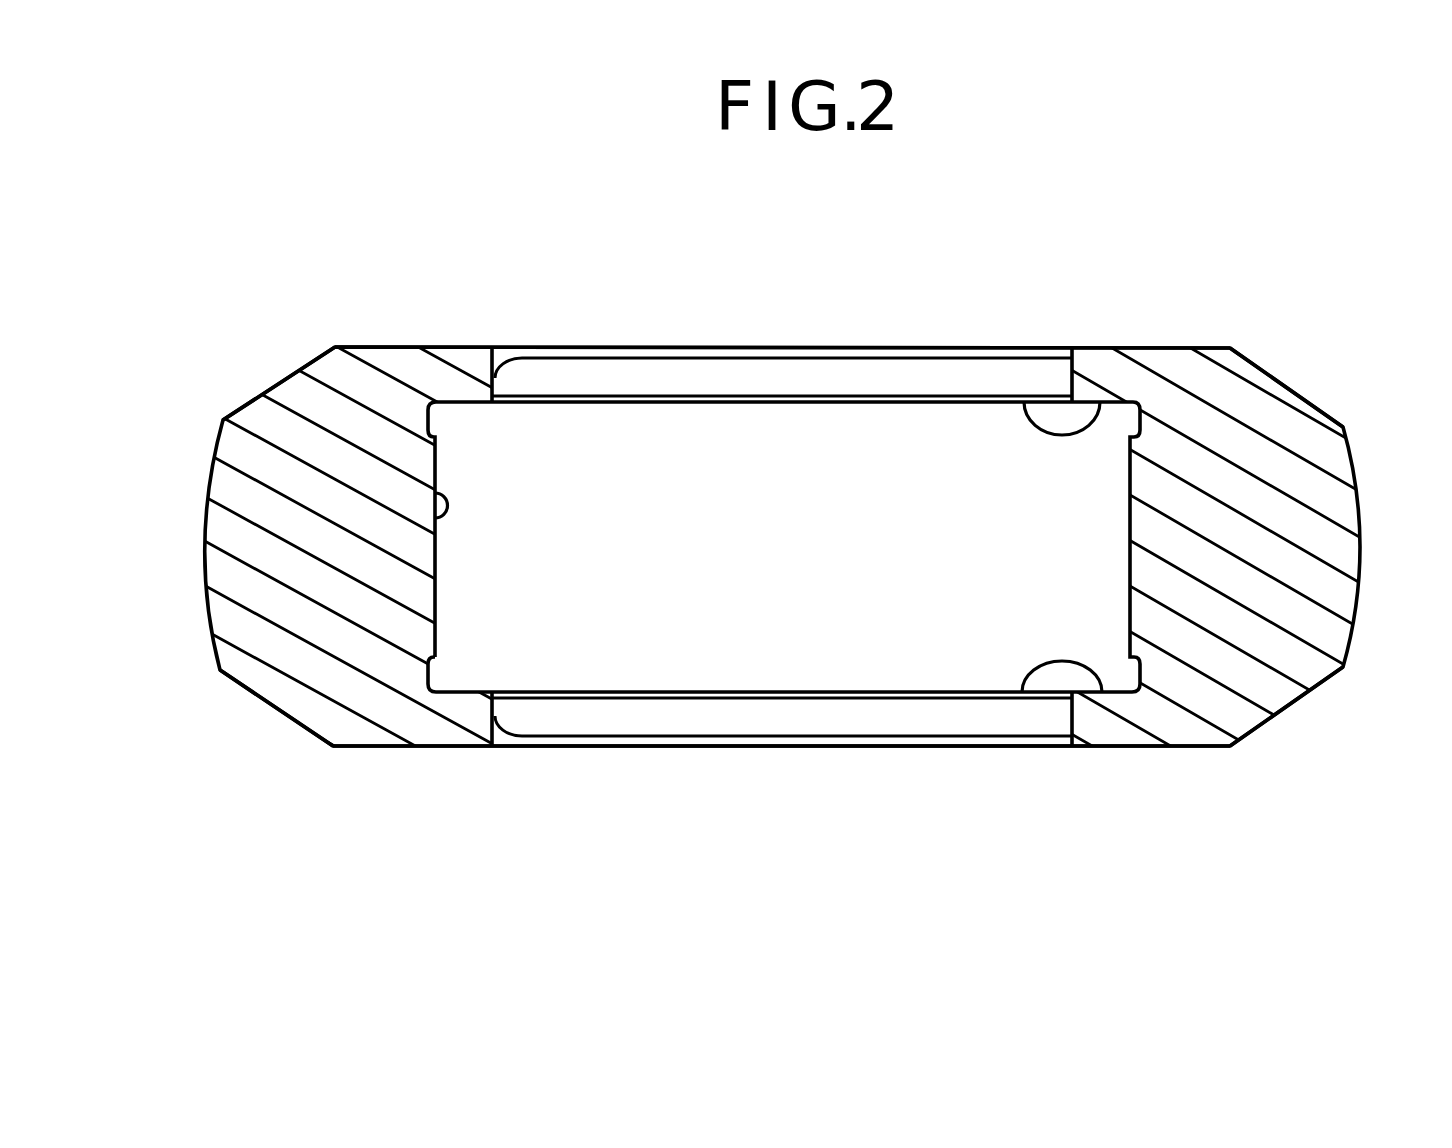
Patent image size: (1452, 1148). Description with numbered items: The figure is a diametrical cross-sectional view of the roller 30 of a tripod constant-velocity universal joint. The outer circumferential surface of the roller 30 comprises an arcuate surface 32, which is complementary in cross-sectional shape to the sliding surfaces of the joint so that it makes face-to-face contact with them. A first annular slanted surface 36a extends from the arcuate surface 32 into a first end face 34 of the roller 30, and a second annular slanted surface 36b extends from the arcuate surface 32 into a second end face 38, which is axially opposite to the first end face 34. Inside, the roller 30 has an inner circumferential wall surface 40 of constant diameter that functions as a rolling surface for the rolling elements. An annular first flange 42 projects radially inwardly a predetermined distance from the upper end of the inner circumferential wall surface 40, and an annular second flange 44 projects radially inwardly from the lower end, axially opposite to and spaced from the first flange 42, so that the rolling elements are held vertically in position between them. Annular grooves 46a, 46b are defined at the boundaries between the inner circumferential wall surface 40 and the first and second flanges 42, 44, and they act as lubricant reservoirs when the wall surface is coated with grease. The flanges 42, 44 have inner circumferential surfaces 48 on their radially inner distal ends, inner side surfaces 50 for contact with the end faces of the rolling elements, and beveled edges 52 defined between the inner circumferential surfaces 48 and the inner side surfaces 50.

The roller 30 is at (1166, 777).
The arcuate surface 32 is at (205, 553).
The first end face 34 is at (380, 747).
The first annular slanted surface 36a is at (272, 713).
The second annular slanted surface 36b is at (264, 393).
The second end face 38 is at (1147, 347).
The inner circumferential wall surface 40 is at (435, 518).
The first flange 42 is at (797, 370).
The second flange 44 is at (1092, 720).
The annular groove 46a is at (442, 400).
The annular groove 46b is at (440, 690).
The inner circumferential surface 48 is at (522, 348).
The inner side surface 50 is at (1025, 405).
The beveled edge 52 is at (500, 405).